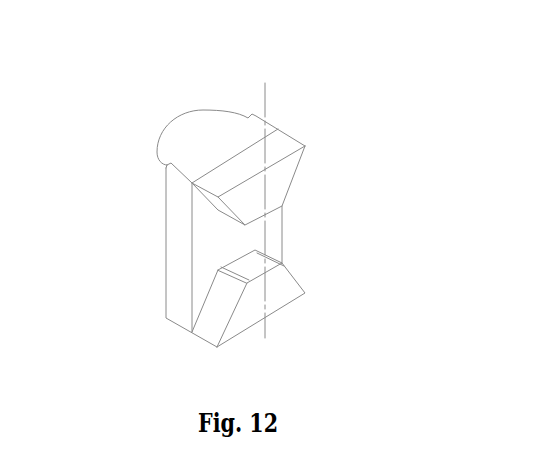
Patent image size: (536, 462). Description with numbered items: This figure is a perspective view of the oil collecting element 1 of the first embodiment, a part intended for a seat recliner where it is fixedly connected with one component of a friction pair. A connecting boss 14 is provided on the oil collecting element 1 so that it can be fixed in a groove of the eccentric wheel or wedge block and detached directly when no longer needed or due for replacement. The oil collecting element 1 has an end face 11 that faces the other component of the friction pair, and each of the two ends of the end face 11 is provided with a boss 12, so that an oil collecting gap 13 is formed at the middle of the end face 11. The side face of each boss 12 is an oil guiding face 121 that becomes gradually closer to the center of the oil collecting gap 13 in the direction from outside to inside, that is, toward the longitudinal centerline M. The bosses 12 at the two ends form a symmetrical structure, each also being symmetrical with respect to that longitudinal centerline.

The oil collecting element 1 is at (229, 207).
The connecting boss 14 is at (190, 148).
The end face 11 is at (191, 221).
The oil collecting gap 13 is at (271, 232).
The boss 12 is at (229, 282).
The oil guiding face 121 is at (205, 328).